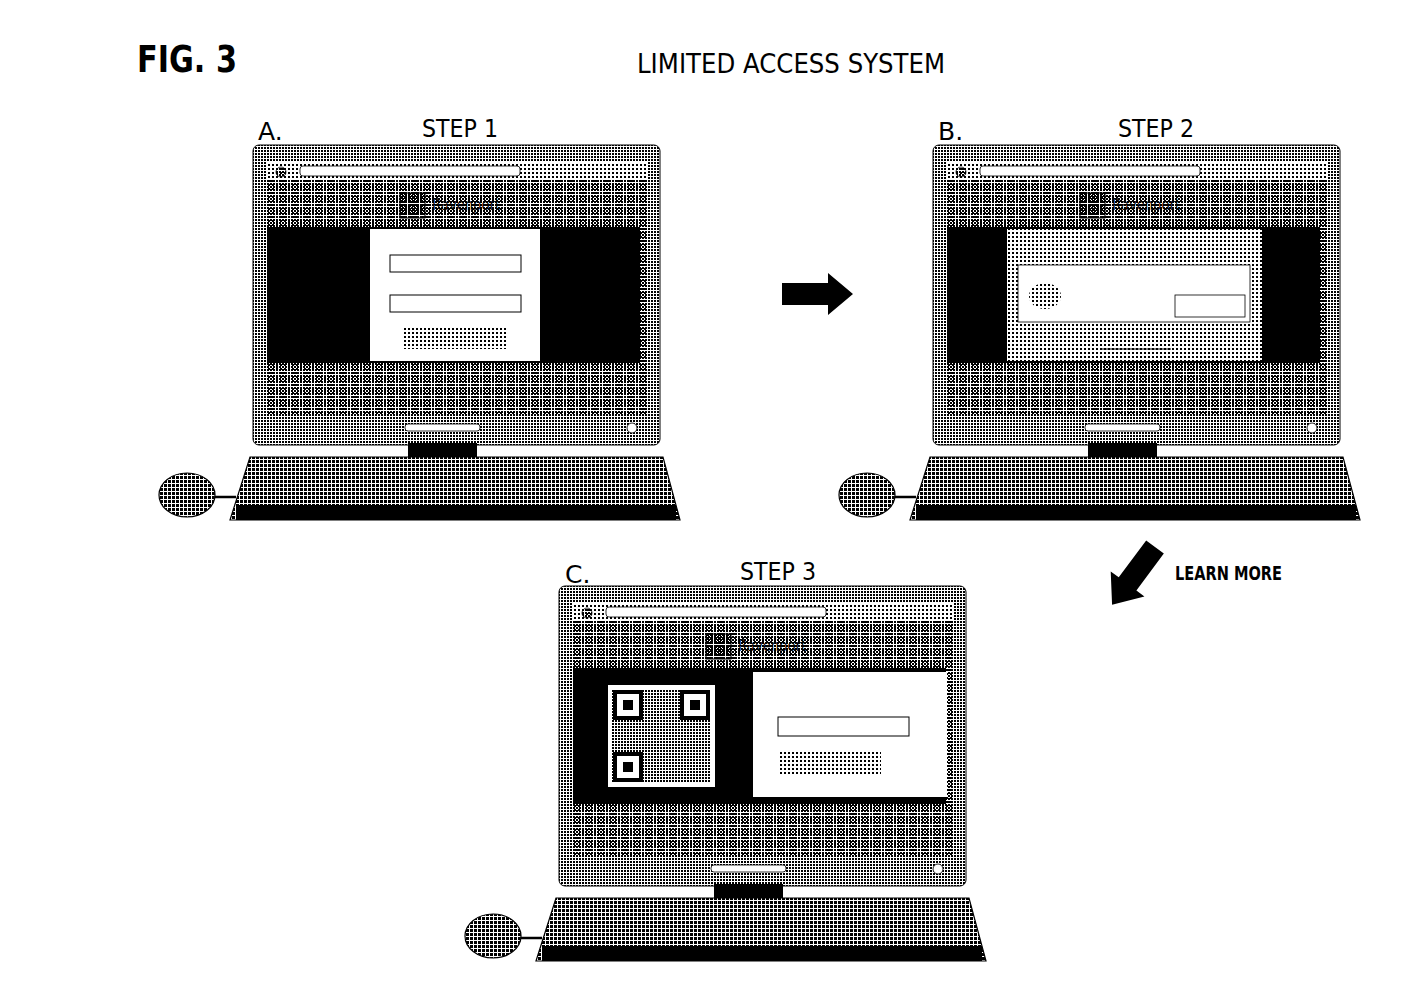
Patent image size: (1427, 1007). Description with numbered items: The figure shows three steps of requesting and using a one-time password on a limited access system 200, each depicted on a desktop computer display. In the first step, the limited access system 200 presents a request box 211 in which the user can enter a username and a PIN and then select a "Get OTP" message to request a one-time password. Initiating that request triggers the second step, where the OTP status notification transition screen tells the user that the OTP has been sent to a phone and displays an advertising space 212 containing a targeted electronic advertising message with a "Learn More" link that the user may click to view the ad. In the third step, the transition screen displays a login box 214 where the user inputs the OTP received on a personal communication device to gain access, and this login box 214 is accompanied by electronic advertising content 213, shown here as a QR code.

The limited access system 200 is at (811, 107).
The request box 211 is at (545, 351).
The advertising space 212 is at (1242, 333).
The electronic advertising content 213 is at (618, 710).
The login box 214 is at (910, 753).